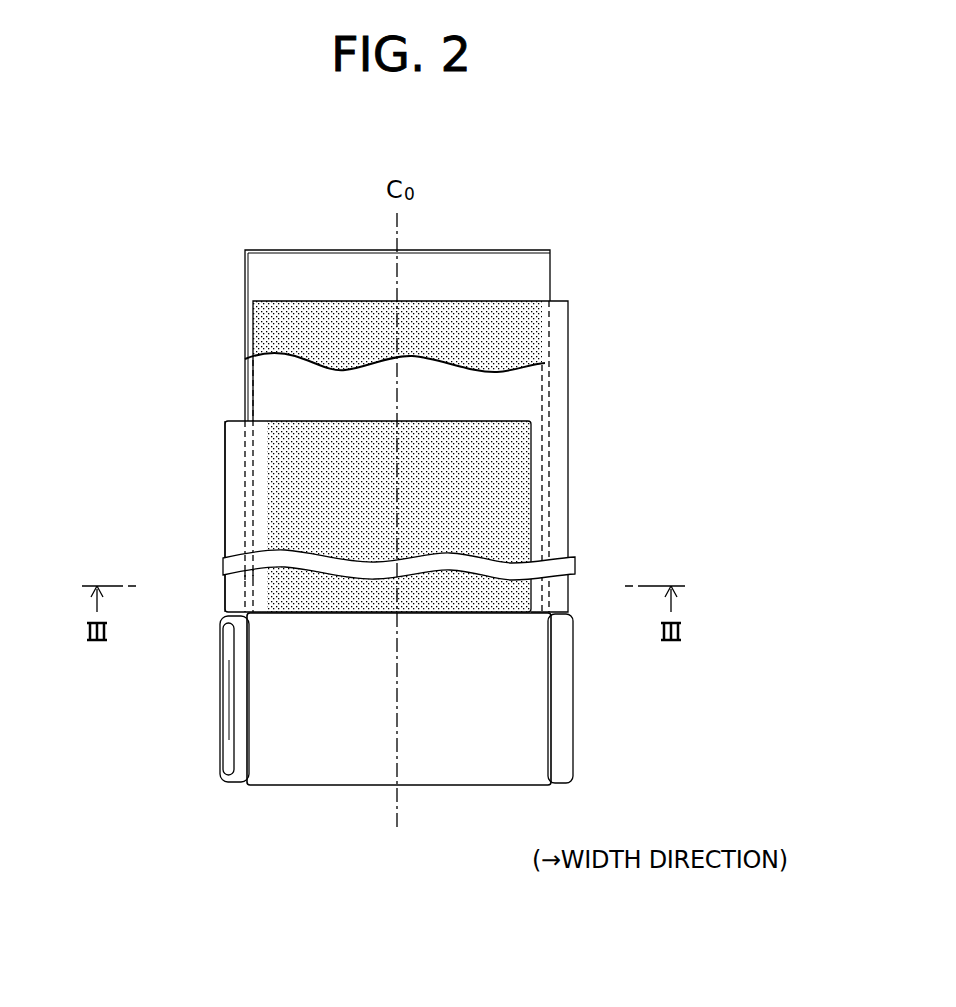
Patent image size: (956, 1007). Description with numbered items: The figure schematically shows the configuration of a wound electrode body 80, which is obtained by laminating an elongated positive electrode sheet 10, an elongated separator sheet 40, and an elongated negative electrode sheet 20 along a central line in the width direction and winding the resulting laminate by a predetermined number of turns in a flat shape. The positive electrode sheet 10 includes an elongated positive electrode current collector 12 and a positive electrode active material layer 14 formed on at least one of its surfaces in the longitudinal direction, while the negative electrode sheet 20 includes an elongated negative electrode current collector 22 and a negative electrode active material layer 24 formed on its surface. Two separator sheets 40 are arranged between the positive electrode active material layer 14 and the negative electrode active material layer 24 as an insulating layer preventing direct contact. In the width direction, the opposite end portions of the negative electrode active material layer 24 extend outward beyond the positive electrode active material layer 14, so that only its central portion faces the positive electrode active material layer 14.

The positive electrode sheet 10 is at (353, 516).
The positive electrode current collector 12 is at (224, 545).
The positive electrode active material layer 14 is at (280, 438).
The negative electrode sheet 20 is at (455, 453).
The negative electrode current collector 22 is at (568, 462).
The negative electrode active material layer 24 is at (538, 326).
The separator sheet 40 is at (267, 278).
The wound electrode body 80 is at (453, 762).